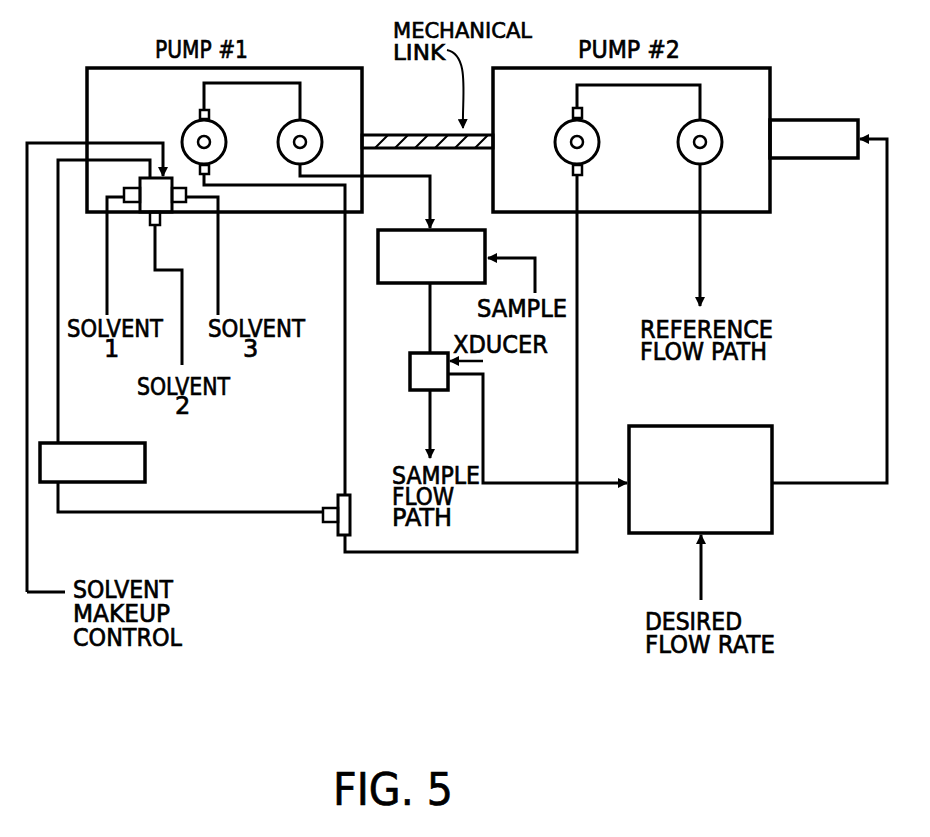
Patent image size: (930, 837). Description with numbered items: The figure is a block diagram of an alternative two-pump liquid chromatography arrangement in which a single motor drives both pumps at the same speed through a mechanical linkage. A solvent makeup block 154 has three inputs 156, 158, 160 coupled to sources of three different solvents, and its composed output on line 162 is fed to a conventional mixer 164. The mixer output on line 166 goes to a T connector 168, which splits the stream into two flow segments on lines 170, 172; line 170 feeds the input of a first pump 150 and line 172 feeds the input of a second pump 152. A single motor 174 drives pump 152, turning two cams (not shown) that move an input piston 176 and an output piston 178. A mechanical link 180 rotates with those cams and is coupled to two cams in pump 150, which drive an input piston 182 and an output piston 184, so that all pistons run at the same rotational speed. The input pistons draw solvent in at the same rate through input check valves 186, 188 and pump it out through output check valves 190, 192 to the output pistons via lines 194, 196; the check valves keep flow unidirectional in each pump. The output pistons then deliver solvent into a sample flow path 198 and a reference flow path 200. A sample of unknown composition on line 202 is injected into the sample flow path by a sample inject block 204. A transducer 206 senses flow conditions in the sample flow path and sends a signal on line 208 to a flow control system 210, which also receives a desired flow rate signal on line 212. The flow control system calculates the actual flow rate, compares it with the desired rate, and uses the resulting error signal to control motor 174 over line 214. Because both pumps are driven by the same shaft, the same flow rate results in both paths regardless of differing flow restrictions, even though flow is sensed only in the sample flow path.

The first pump 150 is at (105, 68).
The second pump 152 is at (730, 68).
The solvent makeup block 154 is at (165, 205).
The first solvent input 156 is at (107, 262).
The second solvent input 158 is at (182, 295).
The third solvent input 160 is at (218, 255).
The output line of solvent makeup block 162 is at (58, 422).
The mixer 164 is at (145, 465).
The mixer output line 166 is at (205, 512).
The T connector 168 is at (350, 505).
The line to first pump 170 is at (345, 450).
The line to second pump 172 is at (455, 552).
The motor 174 is at (805, 120).
The input piston 176 is at (572, 137).
The output piston 178 is at (704, 137).
The mechanical link 180 is at (420, 135).
The input piston 182 is at (200, 138).
The output piston 184 is at (298, 134).
The input check valve 186 is at (210, 170).
The input check valve 188 is at (582, 170).
The output check valve 190 is at (200, 112).
The output check valve 192 is at (582, 113).
The line to output piston 194 is at (300, 97).
The line to output piston 196 is at (700, 92).
The sample flow path 198 is at (430, 192).
The reference flow path 200 is at (700, 262).
The sample line 202 is at (548, 240).
The sample inject block 204 is at (408, 283).
The transducer 206 is at (418, 390).
The transducer signal line 208 is at (592, 483).
The flow control system 210 is at (757, 533).
The flow control signal line 212 is at (700, 570).
The motor control line 214 is at (815, 483).